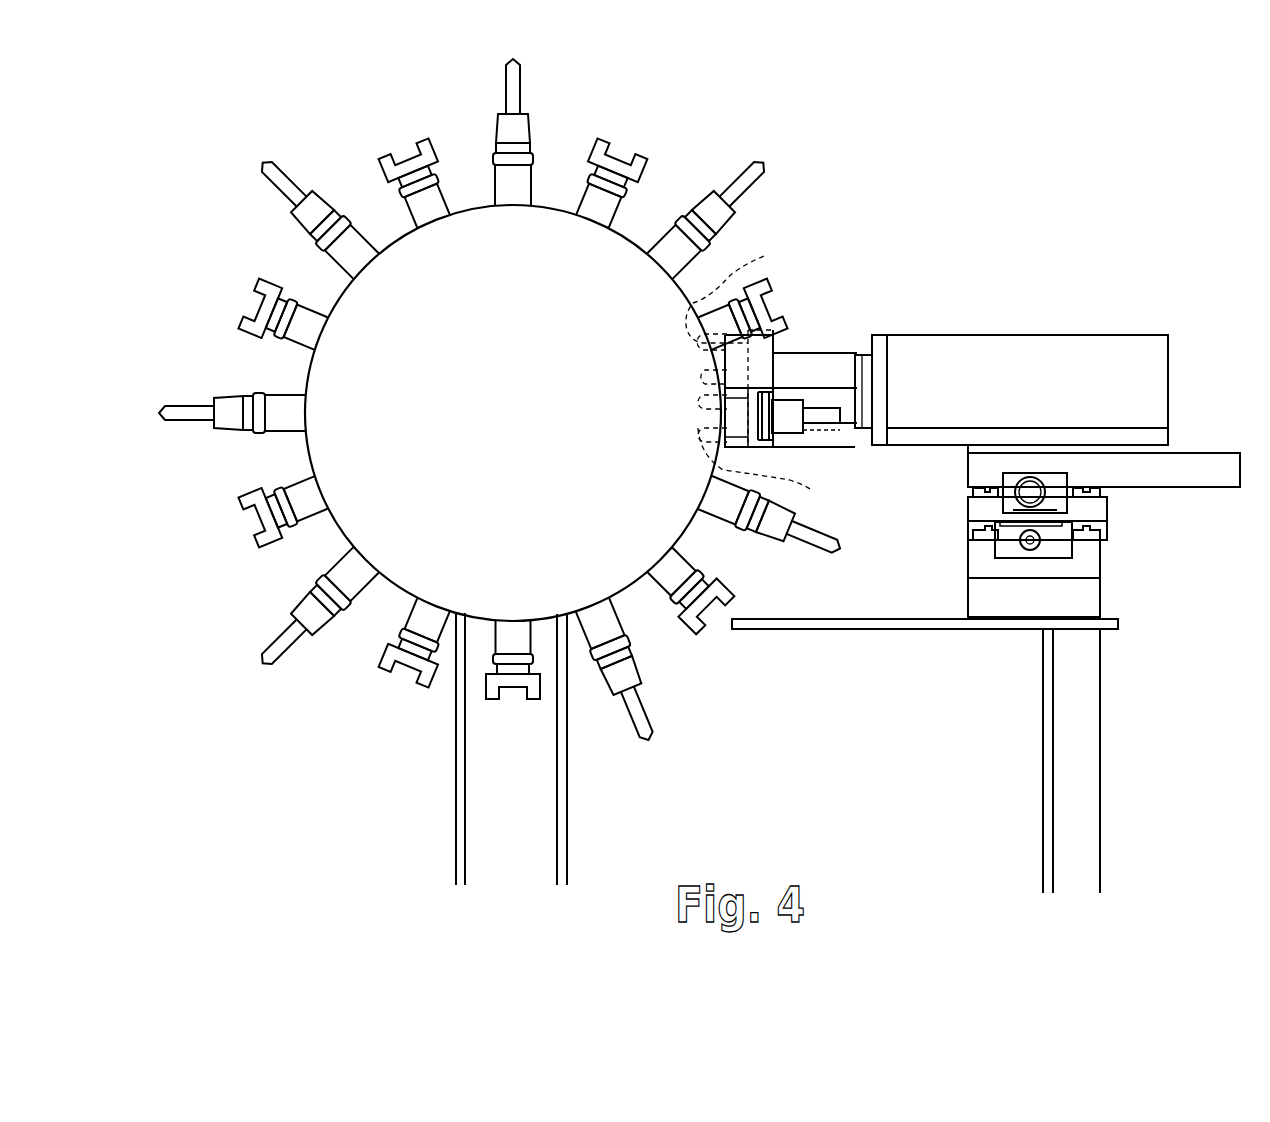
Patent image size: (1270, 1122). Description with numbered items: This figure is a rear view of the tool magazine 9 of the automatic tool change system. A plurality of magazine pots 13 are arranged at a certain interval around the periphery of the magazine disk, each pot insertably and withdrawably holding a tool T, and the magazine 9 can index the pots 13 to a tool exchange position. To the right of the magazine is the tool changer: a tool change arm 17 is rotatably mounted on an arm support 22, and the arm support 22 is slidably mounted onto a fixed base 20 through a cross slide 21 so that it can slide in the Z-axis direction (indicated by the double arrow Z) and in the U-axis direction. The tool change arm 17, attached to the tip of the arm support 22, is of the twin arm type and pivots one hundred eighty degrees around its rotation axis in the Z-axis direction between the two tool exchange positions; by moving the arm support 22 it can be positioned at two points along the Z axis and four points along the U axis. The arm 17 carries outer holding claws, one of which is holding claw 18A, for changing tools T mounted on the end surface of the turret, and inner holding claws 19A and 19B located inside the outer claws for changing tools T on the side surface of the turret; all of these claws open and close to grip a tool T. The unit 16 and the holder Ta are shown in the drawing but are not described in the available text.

The tool magazine 9 is at (558, 194).
The magazine pot 13 is at (605, 212).
The tool holder Ta is at (686, 222).
The tool T is at (747, 222).
The tool change arm 17 is at (757, 358).
The holding claw 18A is at (785, 390).
The holding claw 19A is at (789, 471).
The holding claw 19B is at (755, 286).
The Z-axis direction Z is at (1018, 185).
The tool changer drive unit 16 is at (1046, 324).
The arm support 22 is at (1128, 352).
The cross slide 21 is at (1160, 480).
The fixed base 20 is at (1090, 600).